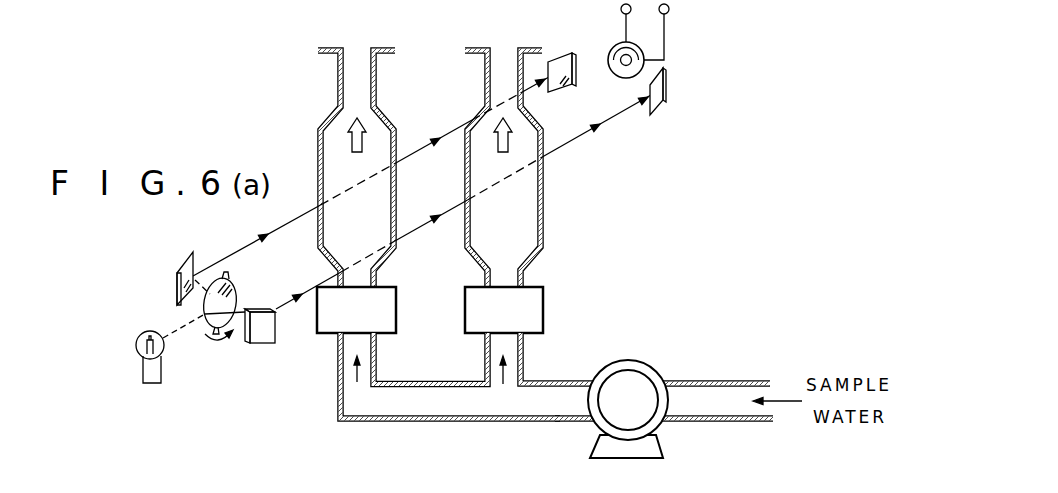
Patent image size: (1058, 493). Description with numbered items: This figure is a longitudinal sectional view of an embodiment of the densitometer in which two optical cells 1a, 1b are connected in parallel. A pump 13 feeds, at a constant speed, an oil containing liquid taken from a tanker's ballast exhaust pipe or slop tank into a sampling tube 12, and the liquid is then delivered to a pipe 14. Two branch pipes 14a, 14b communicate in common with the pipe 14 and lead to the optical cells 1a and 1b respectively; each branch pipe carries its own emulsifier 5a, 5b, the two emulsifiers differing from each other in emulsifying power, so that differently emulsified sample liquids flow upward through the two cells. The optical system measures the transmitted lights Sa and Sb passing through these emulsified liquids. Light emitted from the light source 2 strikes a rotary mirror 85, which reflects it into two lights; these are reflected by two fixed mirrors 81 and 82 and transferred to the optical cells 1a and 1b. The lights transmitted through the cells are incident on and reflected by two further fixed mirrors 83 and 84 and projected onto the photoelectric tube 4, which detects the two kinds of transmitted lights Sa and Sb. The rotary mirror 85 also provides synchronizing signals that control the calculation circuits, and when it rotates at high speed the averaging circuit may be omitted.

The optical cell 1a is at (318, 140).
The optical cell 1b is at (543, 180).
The light source 2 is at (142, 369).
The photoelectric tube 4 is at (624, 78).
The emulsifier 5a is at (396, 322).
The emulsifier 5b is at (543, 322).
The sampling tube 12 is at (725, 380).
The pump 13 is at (642, 363).
The pipe 14 is at (562, 430).
The branch pipe 14a is at (338, 412).
The branch pipe 14b is at (485, 368).
The fixed mirror 81 is at (178, 263).
The fixed mirror 82 is at (267, 343).
The fixed mirror 83 is at (553, 58).
The fixed mirror 84 is at (666, 92).
The rotary mirror 85 is at (237, 292).
The transmitted light Sa is at (371, 176).
The transmitted light Sb is at (463, 202).